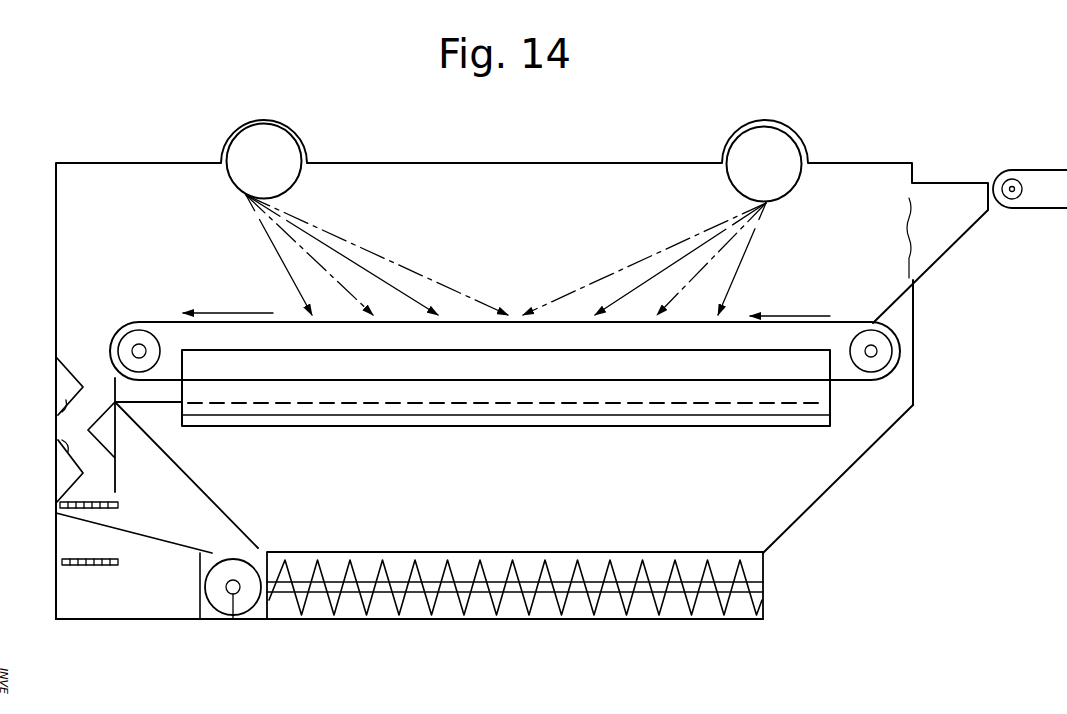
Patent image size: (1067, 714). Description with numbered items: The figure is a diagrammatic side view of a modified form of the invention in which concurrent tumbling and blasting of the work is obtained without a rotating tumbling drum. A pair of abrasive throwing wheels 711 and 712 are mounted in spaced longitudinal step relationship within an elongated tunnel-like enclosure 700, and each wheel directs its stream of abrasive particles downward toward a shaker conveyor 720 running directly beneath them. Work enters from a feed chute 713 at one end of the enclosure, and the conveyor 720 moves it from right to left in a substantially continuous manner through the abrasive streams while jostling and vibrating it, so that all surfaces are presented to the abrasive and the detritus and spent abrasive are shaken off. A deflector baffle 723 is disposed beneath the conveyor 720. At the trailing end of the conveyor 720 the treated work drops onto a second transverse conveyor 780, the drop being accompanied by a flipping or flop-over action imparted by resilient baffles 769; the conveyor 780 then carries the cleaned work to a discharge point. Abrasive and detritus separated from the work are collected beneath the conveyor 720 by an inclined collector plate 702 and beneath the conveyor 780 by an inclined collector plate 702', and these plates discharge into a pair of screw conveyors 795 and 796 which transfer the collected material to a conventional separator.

The tunnel-like enclosure 700 is at (119, 162).
The abrasive throwing wheel 711 is at (728, 143).
The abrasive throwing wheel 712 is at (304, 145).
The feed conveyor 713 is at (945, 182).
The shaker conveyor 720 is at (838, 321).
The deflector baffle 723 is at (500, 424).
The resilient baffles 769 is at (66, 451).
The inclined collector plate 702 is at (838, 479).
The inclined collector plate 702' is at (134, 524).
The transverse conveyor 780 is at (98, 567).
The screw conveyor 795 is at (515, 562).
The screw conveyor 796 is at (242, 566).